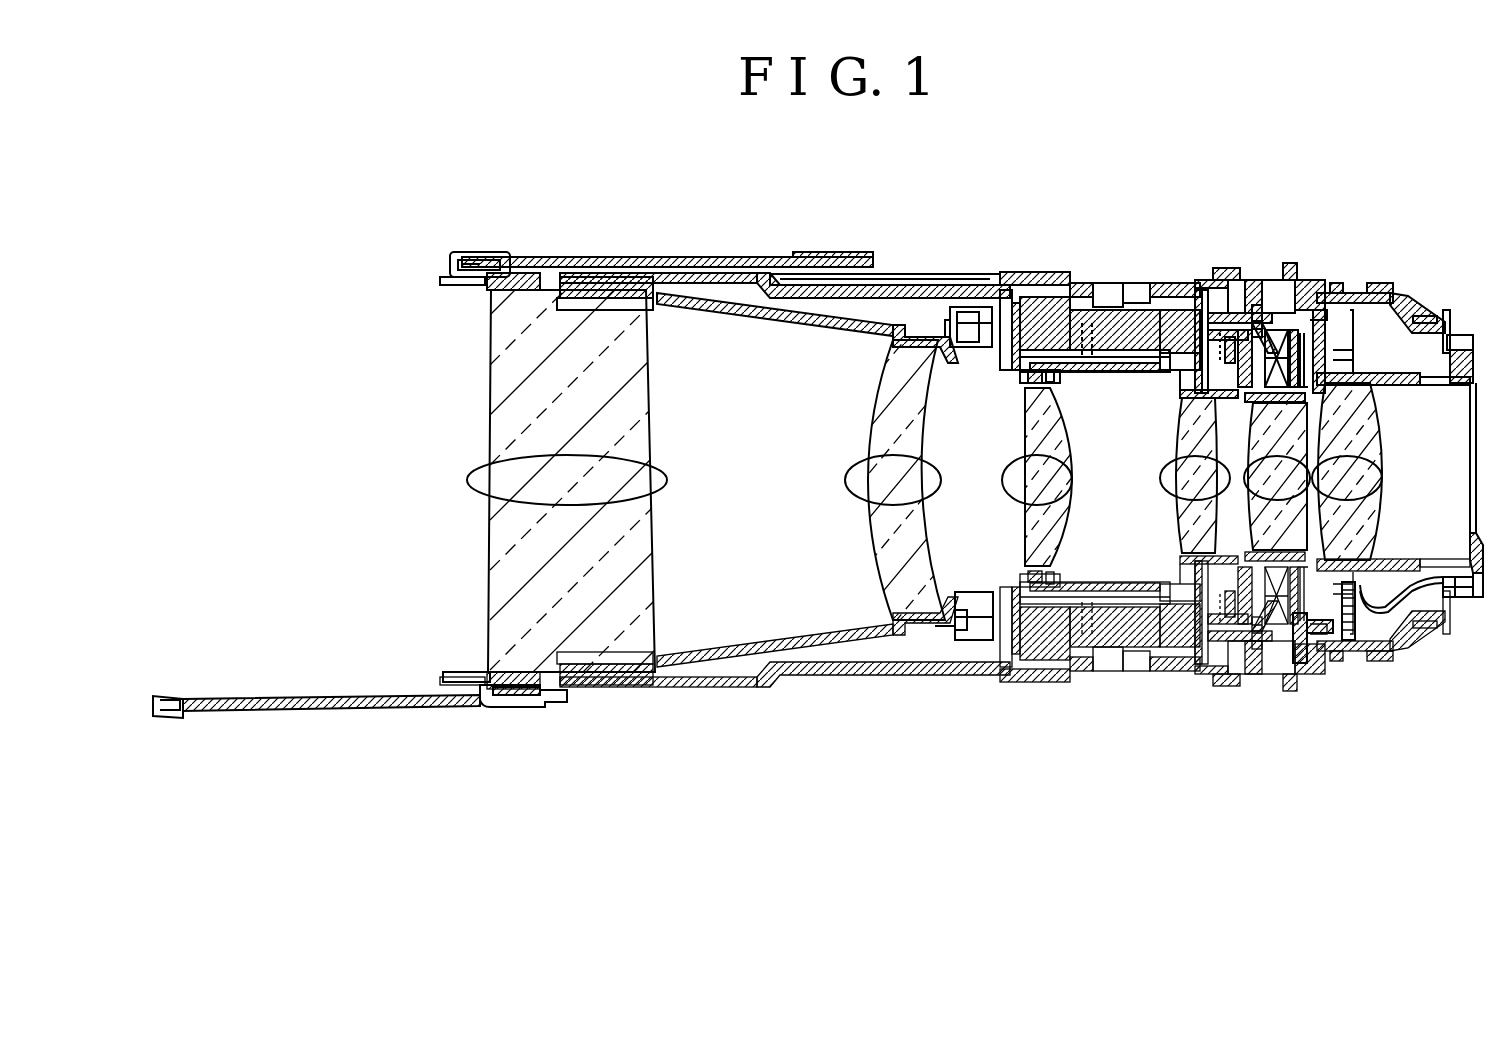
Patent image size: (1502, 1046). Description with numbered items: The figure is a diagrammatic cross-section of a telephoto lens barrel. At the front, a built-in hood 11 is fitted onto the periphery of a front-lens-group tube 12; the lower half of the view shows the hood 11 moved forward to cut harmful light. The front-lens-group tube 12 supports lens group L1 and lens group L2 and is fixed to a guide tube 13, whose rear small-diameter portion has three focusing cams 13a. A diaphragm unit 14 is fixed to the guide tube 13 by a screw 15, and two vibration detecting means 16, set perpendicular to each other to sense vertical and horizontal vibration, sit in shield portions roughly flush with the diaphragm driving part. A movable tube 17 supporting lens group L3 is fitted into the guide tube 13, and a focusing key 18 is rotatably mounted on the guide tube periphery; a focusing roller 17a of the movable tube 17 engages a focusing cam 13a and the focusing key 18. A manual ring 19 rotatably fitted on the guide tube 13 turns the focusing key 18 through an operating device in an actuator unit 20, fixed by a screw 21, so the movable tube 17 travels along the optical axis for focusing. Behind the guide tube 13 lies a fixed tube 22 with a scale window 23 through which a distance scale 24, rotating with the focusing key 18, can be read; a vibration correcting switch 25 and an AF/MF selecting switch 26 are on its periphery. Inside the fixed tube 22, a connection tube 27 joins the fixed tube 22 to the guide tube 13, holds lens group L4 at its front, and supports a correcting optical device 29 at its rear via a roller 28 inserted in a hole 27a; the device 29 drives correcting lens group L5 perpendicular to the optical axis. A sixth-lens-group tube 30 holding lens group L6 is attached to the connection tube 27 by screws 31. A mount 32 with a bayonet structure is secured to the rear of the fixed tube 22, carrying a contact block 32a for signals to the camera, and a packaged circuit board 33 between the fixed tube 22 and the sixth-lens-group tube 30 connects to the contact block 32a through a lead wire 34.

The built-in hood 11 is at (597, 256).
The front-lens-group tube 12 is at (637, 286).
The guide tube 13 is at (705, 272).
The focusing cam 13a is at (1062, 366).
The diaphragm unit 14 is at (960, 318).
The screw 15 is at (977, 323).
The vibration detecting means 16 is at (955, 620).
The movable tube 17 is at (1053, 575).
The focusing roller 17a is at (1037, 383).
The focusing key 18 is at (1073, 345).
The manual ring 19 is at (1027, 271).
The actuator unit 20 is at (1187, 318).
The screw 21 is at (1180, 388).
The fixed tube 22 is at (1308, 282).
The scale window 23 is at (1098, 275).
The distance scale 24 is at (1122, 278).
The vibration correcting switch 25 is at (1226, 313).
The AF/MF selecting switch 26 is at (1400, 293).
The connection tube 27 is at (1243, 330).
The hole 27a is at (1277, 330).
The roller 28 is at (1257, 305).
The correcting optical device 29 is at (1294, 330).
The sixth-lens-group tube 30 is at (1358, 283).
The screw 31 is at (1326, 310).
The mount 32 is at (1448, 325).
The contact block 32a is at (1476, 600).
The packaged circuit board 33 is at (1352, 642).
The lead wire 34 is at (1387, 610).
The lens group L1 is at (472, 492).
The lens group L2 is at (848, 487).
The lens group L3 is at (1005, 492).
The lens group L4 is at (1163, 487).
The correcting lens group L5 is at (1252, 466).
The lens group L6 is at (1385, 483).